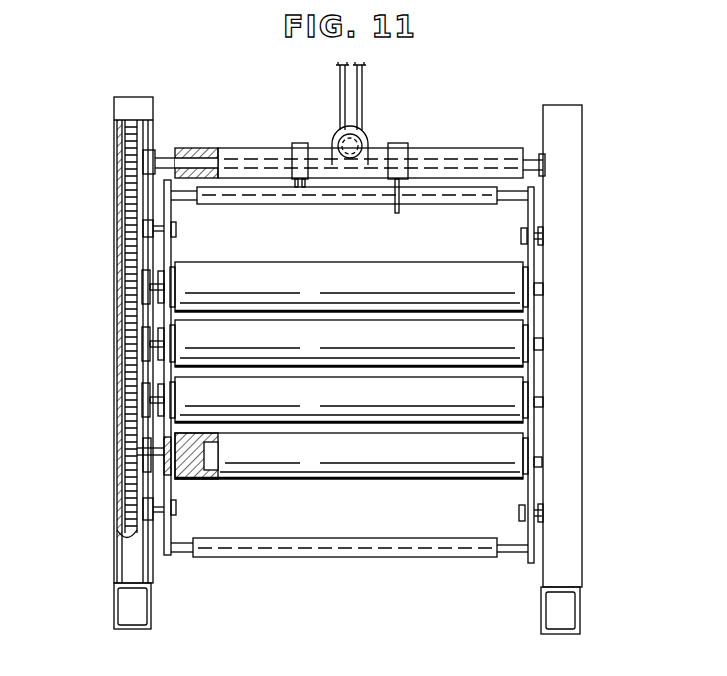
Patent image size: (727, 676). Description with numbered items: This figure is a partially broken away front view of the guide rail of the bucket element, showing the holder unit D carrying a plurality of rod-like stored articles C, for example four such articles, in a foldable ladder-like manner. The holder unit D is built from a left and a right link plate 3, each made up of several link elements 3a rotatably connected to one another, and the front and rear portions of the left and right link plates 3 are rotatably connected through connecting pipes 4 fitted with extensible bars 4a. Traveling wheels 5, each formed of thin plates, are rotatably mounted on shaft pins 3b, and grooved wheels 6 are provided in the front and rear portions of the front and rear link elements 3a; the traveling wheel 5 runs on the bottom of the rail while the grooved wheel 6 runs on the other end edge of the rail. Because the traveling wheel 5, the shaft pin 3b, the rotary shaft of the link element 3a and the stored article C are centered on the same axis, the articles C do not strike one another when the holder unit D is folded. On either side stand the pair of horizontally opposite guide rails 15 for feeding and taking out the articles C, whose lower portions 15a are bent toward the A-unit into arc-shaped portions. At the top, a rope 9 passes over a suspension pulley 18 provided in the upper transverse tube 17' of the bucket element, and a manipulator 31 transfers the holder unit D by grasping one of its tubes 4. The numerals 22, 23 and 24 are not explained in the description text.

The link plate 3 is at (543, 554).
The link element 3a is at (533, 373).
The shaft pin 3b is at (536, 408).
The connecting pipe 4 is at (428, 206).
The extensible bar 4a is at (503, 202).
The traveling wheel 5 is at (142, 455).
The grooved wheel 6 is at (140, 245).
The rope 9 is at (363, 78).
The guide rail 15 is at (122, 548).
The lower portion of the guide rail 15a is at (115, 598).
The upper transverse tube 17' is at (381, 136).
The suspension pulley 18 is at (337, 150).
The bushing 22 is at (188, 148).
The chain 23 is at (127, 205).
The slider 24 is at (133, 162).
The manipulator 31 is at (298, 208).
The rod-like stored article C is at (440, 342).
The holder unit D is at (433, 566).